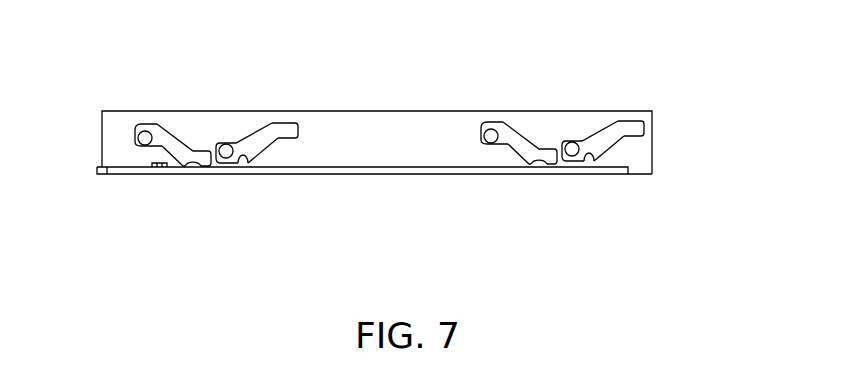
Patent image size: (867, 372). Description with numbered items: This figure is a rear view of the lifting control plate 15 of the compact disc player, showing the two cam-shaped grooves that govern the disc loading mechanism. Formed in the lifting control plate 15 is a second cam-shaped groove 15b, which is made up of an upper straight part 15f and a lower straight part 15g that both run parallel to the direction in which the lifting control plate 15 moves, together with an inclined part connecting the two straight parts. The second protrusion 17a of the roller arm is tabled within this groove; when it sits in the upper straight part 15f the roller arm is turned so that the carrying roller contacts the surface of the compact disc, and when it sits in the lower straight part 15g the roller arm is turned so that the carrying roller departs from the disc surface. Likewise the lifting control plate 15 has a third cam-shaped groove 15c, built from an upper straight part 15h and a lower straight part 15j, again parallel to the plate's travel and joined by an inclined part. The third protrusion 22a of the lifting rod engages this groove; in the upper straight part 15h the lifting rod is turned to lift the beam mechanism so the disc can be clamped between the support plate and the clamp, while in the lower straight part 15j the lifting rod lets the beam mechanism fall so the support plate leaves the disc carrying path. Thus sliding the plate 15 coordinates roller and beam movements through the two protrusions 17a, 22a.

The lifting control plate 15 is at (367, 130).
The second cam-shaped groove 15b is at (83, 188).
The third cam-shaped groove 15c is at (331, 188).
The upper straight part 15f is at (147, 141).
The lower straight part 15g is at (189, 163).
The upper straight part 15h is at (287, 138).
The lower straight part 15j is at (241, 153).
The second protrusion 17a is at (143, 135).
The third protrusion 22a is at (227, 147).